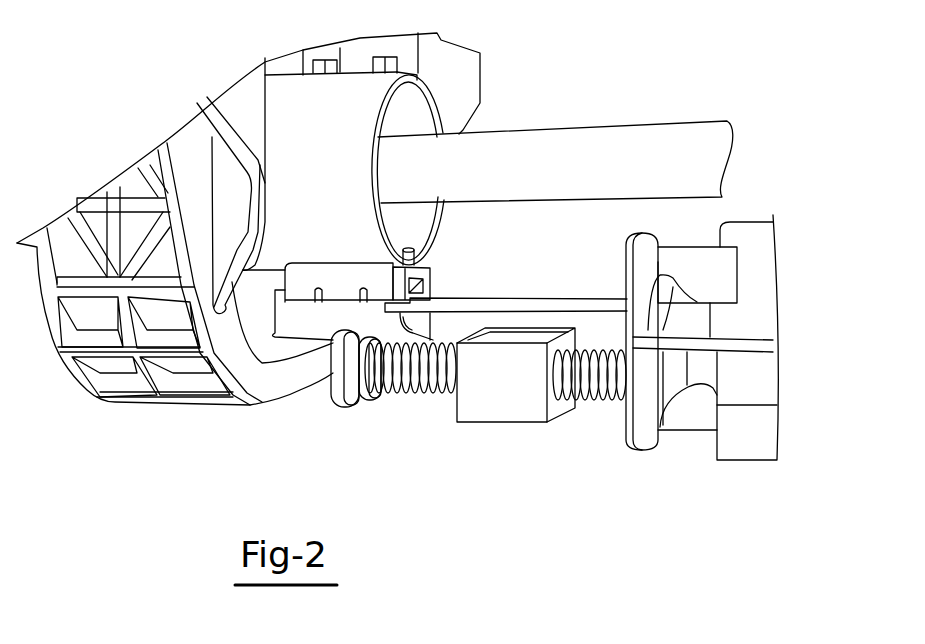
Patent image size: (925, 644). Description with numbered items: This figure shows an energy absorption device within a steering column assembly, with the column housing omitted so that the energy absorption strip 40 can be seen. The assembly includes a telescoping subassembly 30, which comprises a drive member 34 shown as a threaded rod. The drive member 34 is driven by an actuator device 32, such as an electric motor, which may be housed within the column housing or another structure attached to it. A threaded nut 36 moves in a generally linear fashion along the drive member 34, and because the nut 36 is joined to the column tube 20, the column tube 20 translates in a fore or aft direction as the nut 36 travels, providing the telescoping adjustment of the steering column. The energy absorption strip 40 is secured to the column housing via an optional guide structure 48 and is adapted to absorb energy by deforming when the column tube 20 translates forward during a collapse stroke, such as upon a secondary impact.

The column tube 20 is at (290, 90).
The telescoping subassembly 30 is at (623, 486).
The actuator device 32 is at (765, 470).
The drive member 34 is at (390, 390).
The threaded nut 36 is at (482, 405).
The energy absorption strip 40 is at (507, 300).
The guide structure 48 is at (402, 257).